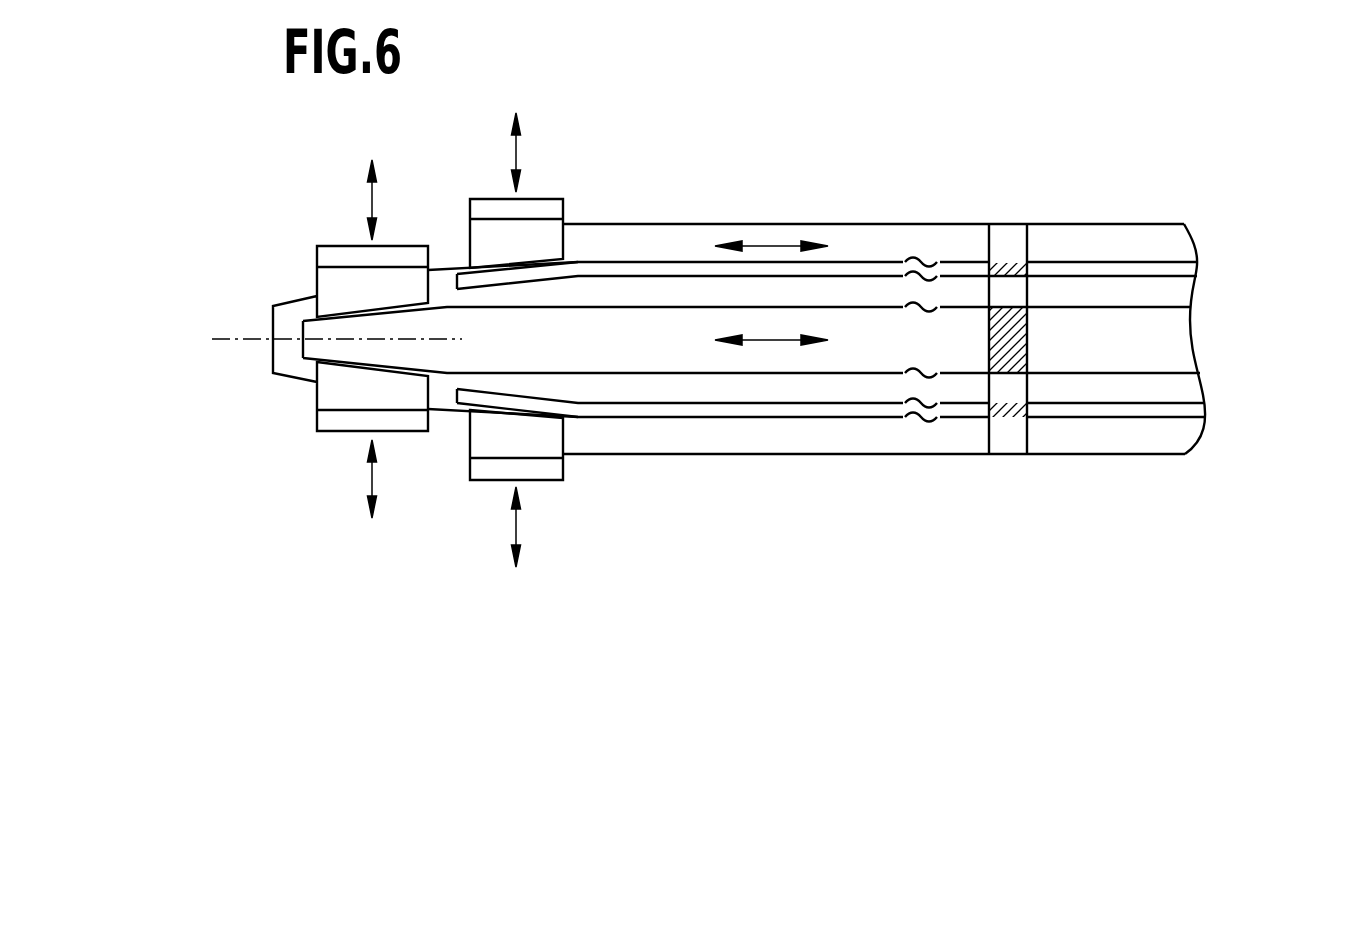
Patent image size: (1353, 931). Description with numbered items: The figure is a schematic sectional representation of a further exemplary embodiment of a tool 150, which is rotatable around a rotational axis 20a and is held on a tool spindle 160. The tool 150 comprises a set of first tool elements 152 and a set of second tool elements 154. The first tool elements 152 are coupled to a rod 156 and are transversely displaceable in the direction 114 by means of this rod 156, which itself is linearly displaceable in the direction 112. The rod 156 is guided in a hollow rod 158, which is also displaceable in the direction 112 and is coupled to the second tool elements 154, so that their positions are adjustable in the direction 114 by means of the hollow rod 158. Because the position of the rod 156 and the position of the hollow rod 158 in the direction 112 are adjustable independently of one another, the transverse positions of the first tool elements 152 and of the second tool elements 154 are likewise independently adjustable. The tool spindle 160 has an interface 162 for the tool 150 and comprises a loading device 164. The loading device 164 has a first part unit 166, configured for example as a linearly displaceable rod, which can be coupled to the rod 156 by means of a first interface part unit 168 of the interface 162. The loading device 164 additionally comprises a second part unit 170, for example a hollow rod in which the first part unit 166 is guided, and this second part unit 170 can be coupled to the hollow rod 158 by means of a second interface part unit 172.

The rotational axis 20a is at (250, 340).
The direction 112 is at (775, 240).
The direction 114 is at (372, 200).
The tool 150 is at (760, 162).
The first tool elements 152 is at (333, 396).
The second tool elements 154 is at (548, 437).
The rod 156 is at (647, 355).
The hollow rod 158 is at (605, 260).
The tool spindle 160 is at (1140, 177).
The interface 162 is at (1020, 476).
The loading device 164 is at (1165, 368).
The first part unit 166 is at (1178, 326).
The first interface part unit 168 is at (1010, 333).
The second part unit 170 is at (1160, 271).
The second interface part unit 172 is at (995, 265).